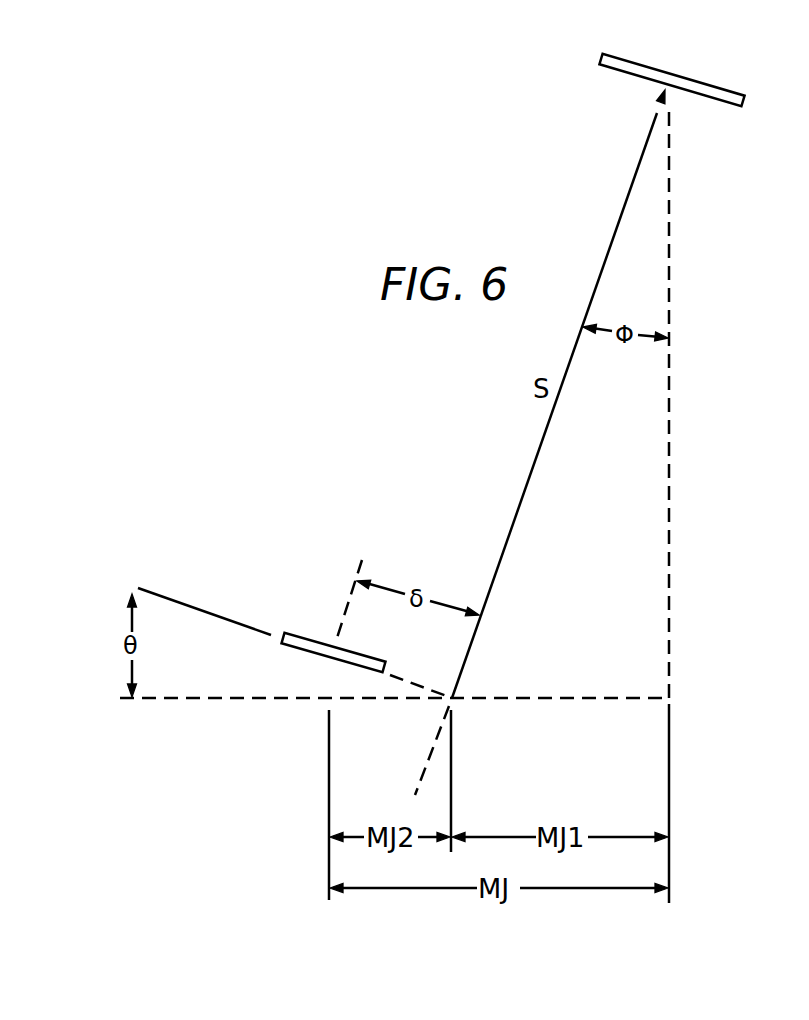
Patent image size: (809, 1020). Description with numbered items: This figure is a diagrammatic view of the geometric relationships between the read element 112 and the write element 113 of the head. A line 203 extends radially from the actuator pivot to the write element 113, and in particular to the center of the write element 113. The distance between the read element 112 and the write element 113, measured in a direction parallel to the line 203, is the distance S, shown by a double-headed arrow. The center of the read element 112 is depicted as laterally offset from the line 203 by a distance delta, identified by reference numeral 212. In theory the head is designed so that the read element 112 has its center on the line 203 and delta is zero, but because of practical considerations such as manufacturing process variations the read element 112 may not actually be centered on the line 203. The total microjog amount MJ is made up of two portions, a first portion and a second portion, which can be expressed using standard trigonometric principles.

The write element 113 is at (688, 78).
The read element 112 is at (310, 636).
The offset distance delta 212 is at (391, 584).
The line 203 is at (421, 758).